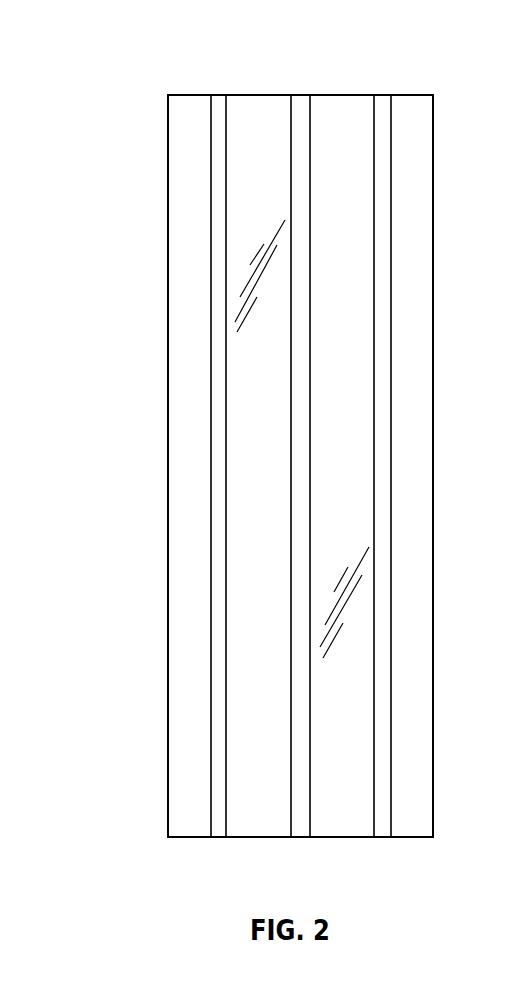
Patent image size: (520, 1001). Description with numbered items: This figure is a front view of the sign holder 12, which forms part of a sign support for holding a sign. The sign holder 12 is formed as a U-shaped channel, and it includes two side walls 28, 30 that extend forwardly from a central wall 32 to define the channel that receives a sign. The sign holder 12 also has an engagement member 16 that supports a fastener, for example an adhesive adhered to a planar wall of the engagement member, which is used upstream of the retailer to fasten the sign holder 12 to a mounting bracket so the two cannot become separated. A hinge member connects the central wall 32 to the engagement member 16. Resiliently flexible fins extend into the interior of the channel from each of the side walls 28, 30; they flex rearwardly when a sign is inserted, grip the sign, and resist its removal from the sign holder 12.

The sign holder 12 is at (148, 63).
The engagement member 16 is at (417, 152).
The side wall 28 is at (220, 823).
The side wall 30 is at (383, 820).
The central wall 32 is at (303, 823).